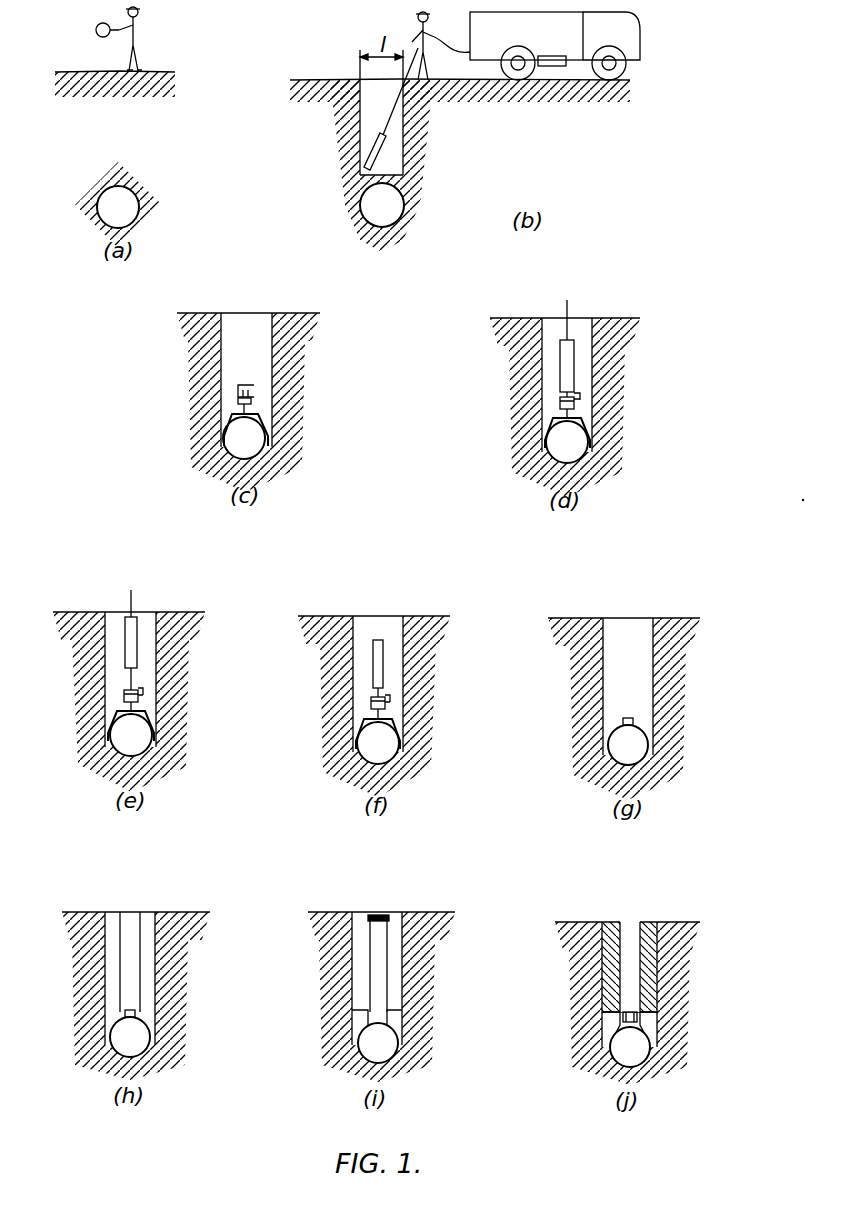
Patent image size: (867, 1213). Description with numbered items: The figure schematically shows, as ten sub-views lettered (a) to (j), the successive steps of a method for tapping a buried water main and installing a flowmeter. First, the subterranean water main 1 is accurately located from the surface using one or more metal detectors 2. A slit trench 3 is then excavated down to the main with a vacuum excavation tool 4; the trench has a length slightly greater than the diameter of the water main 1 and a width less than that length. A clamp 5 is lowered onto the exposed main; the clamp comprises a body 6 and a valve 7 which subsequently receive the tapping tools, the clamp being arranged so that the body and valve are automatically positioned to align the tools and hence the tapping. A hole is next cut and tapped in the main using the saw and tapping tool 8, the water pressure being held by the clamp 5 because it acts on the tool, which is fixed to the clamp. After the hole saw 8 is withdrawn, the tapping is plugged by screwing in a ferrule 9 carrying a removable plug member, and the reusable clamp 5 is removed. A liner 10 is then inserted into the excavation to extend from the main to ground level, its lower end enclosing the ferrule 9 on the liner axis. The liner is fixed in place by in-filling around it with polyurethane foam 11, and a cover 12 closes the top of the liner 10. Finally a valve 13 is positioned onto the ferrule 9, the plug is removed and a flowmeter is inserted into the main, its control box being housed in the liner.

The subterranean water main 1 is at (105, 207).
The metal detector 2 is at (96, 30).
The slit trench 3 is at (395, 148).
The vacuum excavation tool 4 is at (368, 155).
The clamp 5 is at (222, 398).
The body 6 is at (255, 402).
The valve 7 is at (255, 388).
The saw and tapping tool 8 is at (572, 368).
The ferrule 9 is at (623, 721).
The liner 10 is at (142, 970).
The polyurethane foam 11 is at (402, 1022).
The cover 12 is at (380, 914).
The valve 13 is at (637, 1014).